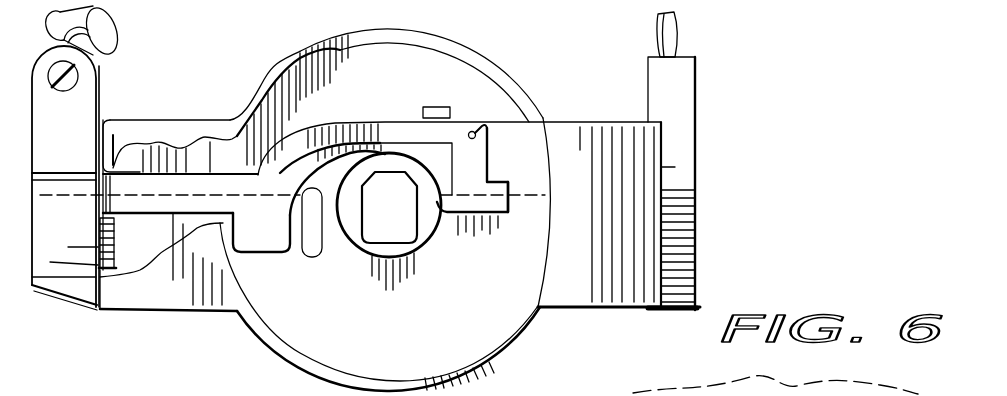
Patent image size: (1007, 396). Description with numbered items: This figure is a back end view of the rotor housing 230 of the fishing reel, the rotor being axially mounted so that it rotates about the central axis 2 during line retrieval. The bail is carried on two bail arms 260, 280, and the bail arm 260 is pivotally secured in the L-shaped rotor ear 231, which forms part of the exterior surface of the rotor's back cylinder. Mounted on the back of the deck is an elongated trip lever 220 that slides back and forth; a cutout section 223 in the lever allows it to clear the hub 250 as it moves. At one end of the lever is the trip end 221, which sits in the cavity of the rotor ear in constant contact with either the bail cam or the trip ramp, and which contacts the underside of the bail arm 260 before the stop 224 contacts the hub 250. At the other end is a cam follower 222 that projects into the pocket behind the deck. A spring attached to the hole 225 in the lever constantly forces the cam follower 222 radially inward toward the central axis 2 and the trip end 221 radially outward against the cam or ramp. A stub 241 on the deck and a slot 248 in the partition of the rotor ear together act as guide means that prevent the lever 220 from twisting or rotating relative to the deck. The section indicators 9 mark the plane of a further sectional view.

The central axis 2 is at (392, 188).
The section line 9- 9 is at (528, 172).
The trip lever 220 is at (391, 130).
The trip end 221 is at (110, 162).
The cam follower 222 is at (498, 178).
The cutout section 223 is at (296, 236).
The stop 224 is at (450, 213).
The hole 225 is at (480, 124).
The rotor housing 230 is at (485, 70).
The rotor ear 231 is at (172, 298).
The stub 241 is at (438, 114).
The slot 248 is at (114, 167).
The hub 250 is at (423, 250).
The bail arm 260 is at (68, 290).
The bail arm 280 is at (688, 178).